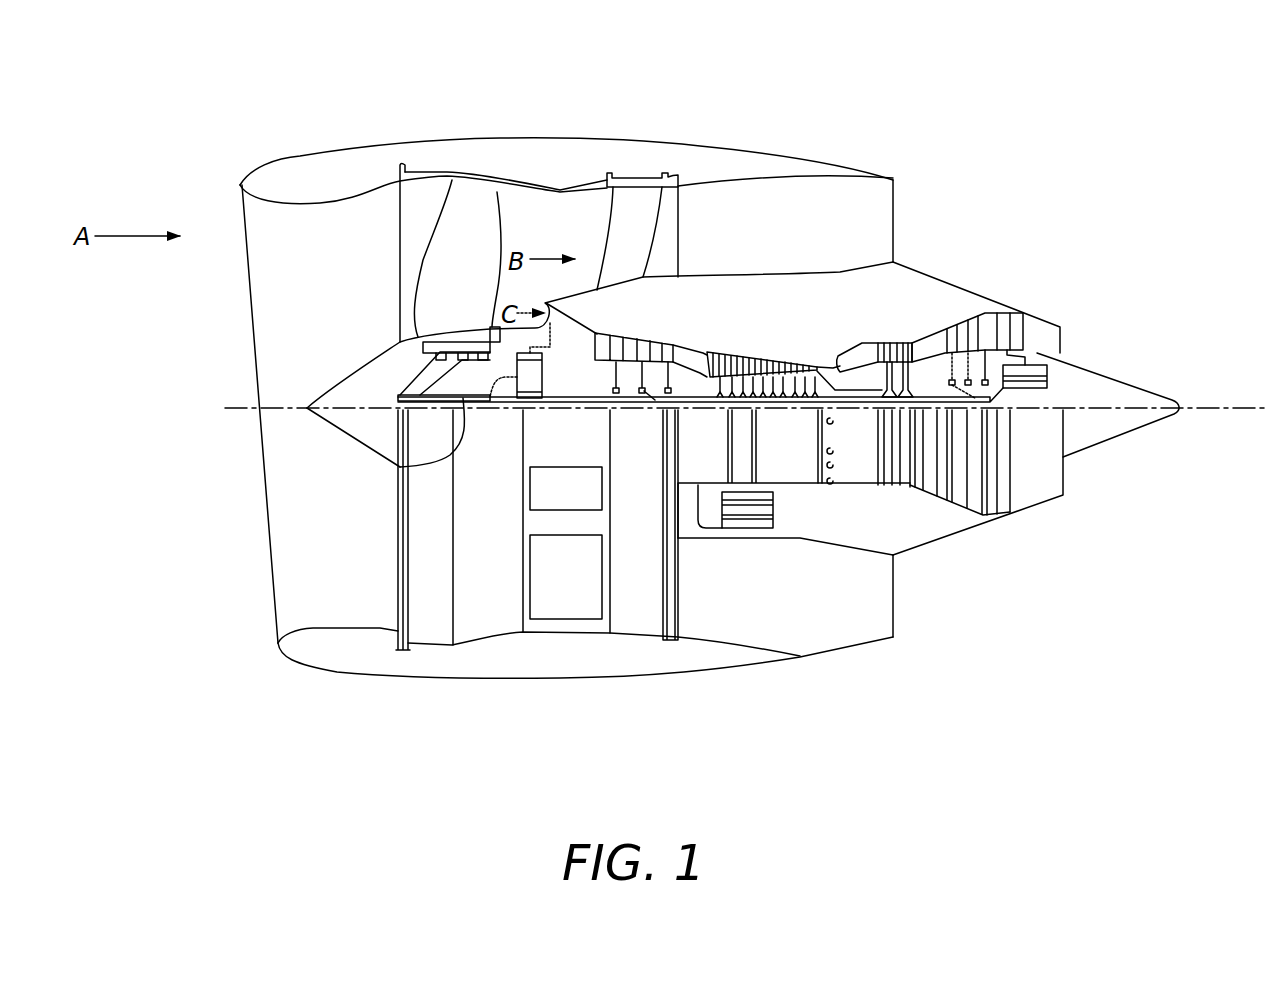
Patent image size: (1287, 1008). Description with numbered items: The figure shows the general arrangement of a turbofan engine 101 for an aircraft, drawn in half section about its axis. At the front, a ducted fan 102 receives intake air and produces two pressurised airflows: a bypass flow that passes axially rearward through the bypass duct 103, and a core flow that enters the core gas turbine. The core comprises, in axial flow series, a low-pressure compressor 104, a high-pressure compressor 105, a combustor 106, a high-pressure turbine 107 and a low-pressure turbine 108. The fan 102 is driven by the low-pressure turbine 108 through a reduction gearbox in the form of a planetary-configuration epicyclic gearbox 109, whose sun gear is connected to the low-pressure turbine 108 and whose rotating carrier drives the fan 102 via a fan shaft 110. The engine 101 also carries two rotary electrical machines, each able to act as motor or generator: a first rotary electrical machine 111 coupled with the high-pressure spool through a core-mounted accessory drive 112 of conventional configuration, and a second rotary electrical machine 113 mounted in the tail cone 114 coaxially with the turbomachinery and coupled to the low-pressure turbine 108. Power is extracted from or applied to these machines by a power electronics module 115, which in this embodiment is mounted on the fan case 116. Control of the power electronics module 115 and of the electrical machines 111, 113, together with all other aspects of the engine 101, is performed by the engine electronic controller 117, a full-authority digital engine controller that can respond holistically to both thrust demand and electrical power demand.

The engine 101 is at (303, 82).
The ducted fan 102 is at (478, 279).
The bypass duct 103 is at (572, 232).
The low-pressure compressor 104 is at (655, 340).
The high-pressure compressor 105 is at (788, 346).
The combustor 106 is at (847, 341).
The high-pressure turbine 107 is at (888, 340).
The low-pressure turbine 108 is at (967, 310).
The epicyclic gearbox 109 is at (556, 370).
The fan shaft 110 is at (395, 467).
The first rotary electrical machine 111 is at (773, 512).
The core-mounted accessory drive 112 is at (712, 513).
The second rotary electrical machine 113 is at (1033, 364).
The tail cone 114 is at (1128, 383).
The power electronics module (PEM) 115 is at (530, 567).
The fan case 116 is at (430, 550).
The engine electronic controller (EEC) 117 is at (523, 488).